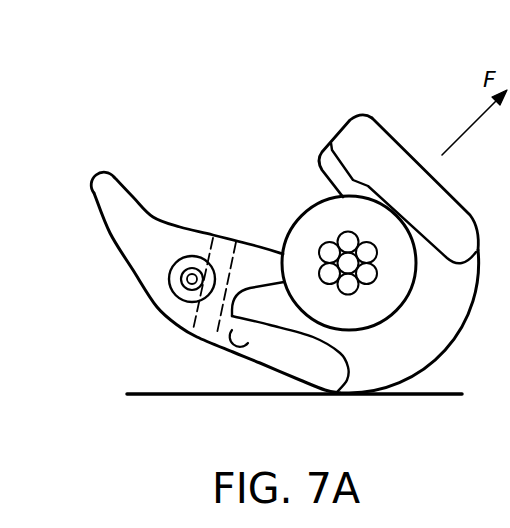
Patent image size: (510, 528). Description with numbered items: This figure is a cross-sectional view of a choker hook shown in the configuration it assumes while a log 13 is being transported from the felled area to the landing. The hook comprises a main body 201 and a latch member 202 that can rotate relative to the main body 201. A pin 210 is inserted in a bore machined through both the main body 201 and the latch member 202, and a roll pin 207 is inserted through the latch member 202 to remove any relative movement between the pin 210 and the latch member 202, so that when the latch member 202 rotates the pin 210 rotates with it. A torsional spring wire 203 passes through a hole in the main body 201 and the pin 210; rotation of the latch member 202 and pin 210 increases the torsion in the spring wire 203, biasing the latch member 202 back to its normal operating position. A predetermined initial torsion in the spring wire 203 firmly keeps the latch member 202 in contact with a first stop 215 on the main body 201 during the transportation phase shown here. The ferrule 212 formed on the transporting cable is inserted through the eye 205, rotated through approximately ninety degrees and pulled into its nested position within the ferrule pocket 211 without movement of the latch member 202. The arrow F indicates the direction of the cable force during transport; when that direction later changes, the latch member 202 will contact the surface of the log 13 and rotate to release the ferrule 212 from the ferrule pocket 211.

The log 13 is at (200, 395).
The main body 201 is at (322, 160).
The latch member 202 is at (127, 228).
The torsional spring wire 203 is at (181, 278).
The eye 205 is at (430, 333).
The roll pin 207 is at (203, 320).
The pin 210 is at (173, 293).
The ferrule pocket 211 is at (383, 183).
The ferrule 212 is at (367, 310).
The first stop 215 is at (233, 348).